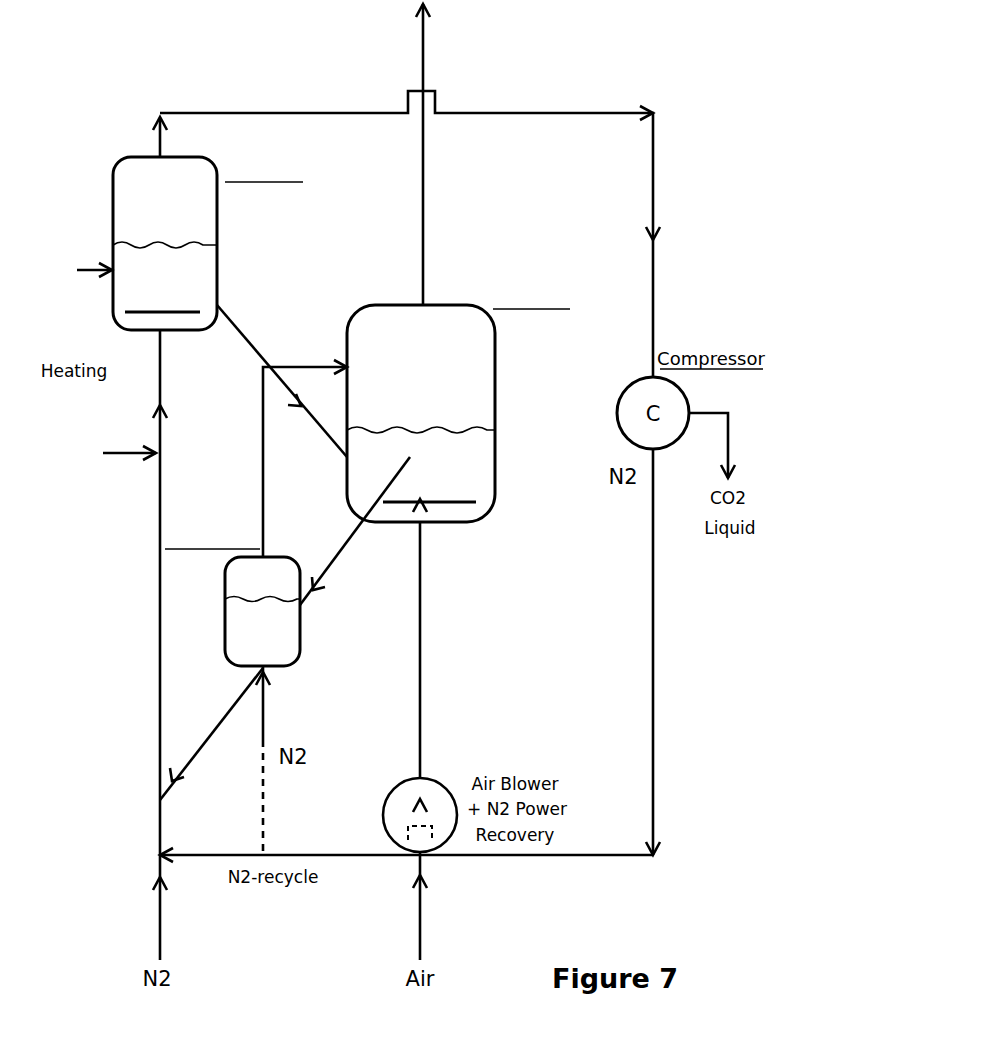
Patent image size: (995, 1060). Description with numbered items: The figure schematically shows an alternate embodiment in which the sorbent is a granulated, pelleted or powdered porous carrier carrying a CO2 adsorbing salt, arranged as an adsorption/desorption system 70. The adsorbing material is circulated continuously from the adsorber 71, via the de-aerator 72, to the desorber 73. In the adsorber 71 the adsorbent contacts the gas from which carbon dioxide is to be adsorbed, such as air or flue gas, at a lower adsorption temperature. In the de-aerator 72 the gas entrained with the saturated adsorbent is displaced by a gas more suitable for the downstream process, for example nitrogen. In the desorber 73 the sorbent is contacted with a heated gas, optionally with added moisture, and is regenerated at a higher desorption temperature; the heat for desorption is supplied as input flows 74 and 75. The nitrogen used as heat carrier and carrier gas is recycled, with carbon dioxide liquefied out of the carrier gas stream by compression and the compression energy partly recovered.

The adsorption/desorption system 70 is at (518, 103).
The adsorber 71 is at (474, 482).
The de-aerator 72 is at (280, 636).
The desorber 73 is at (198, 265).
The heat input flow 74 is at (117, 457).
The heat input flow 75 is at (92, 262).